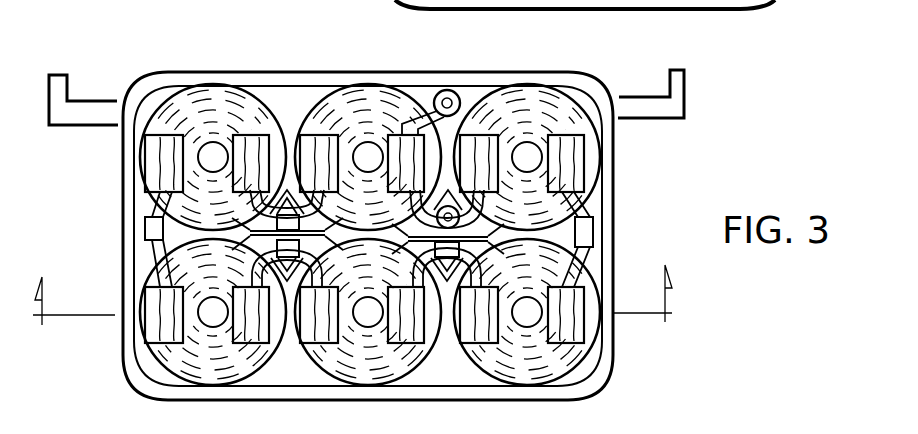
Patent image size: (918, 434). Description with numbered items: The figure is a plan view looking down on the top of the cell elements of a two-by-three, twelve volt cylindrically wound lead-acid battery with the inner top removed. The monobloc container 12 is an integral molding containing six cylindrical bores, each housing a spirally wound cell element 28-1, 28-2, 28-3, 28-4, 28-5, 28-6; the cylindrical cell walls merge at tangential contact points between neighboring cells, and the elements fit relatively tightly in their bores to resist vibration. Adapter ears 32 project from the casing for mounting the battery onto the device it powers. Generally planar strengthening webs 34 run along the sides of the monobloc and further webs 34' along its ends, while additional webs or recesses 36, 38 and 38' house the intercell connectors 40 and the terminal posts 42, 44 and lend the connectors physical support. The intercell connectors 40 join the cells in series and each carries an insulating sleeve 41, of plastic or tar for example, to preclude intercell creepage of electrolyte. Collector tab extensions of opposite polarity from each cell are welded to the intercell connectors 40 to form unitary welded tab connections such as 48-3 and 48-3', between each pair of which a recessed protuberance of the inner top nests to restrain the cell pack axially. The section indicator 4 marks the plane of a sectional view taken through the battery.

The monobloc container 12 is at (614, 218).
The spirally wound cell element 28-1 is at (365, 105).
The spirally wound cell element 28-2 is at (200, 118).
The spirally wound cell element 28-3 is at (173, 357).
The spirally wound cell element 28-4 is at (533, 398).
The spirally wound cell element 28-5 is at (568, 355).
The spirally wound cell element 28-6 is at (535, 100).
The adapter ears 32 is at (664, 110).
The strengthening webs 34 is at (368, 204).
The strengthening webs 34' is at (331, 246).
The web or recess 36 is at (325, 239).
The web or recess 38 is at (470, 225).
The web or recess 38' is at (369, 148).
The intercell connectors 40 is at (330, 201).
The insulating sleeve 41 is at (143, 232).
The terminal post 42 is at (446, 90).
The terminal post 44 is at (458, 204).
The welded tab connection 48-3 is at (323, 239).
The welded tab connection 48-3' is at (329, 312).
The section line 4- 4 is at (355, 277).